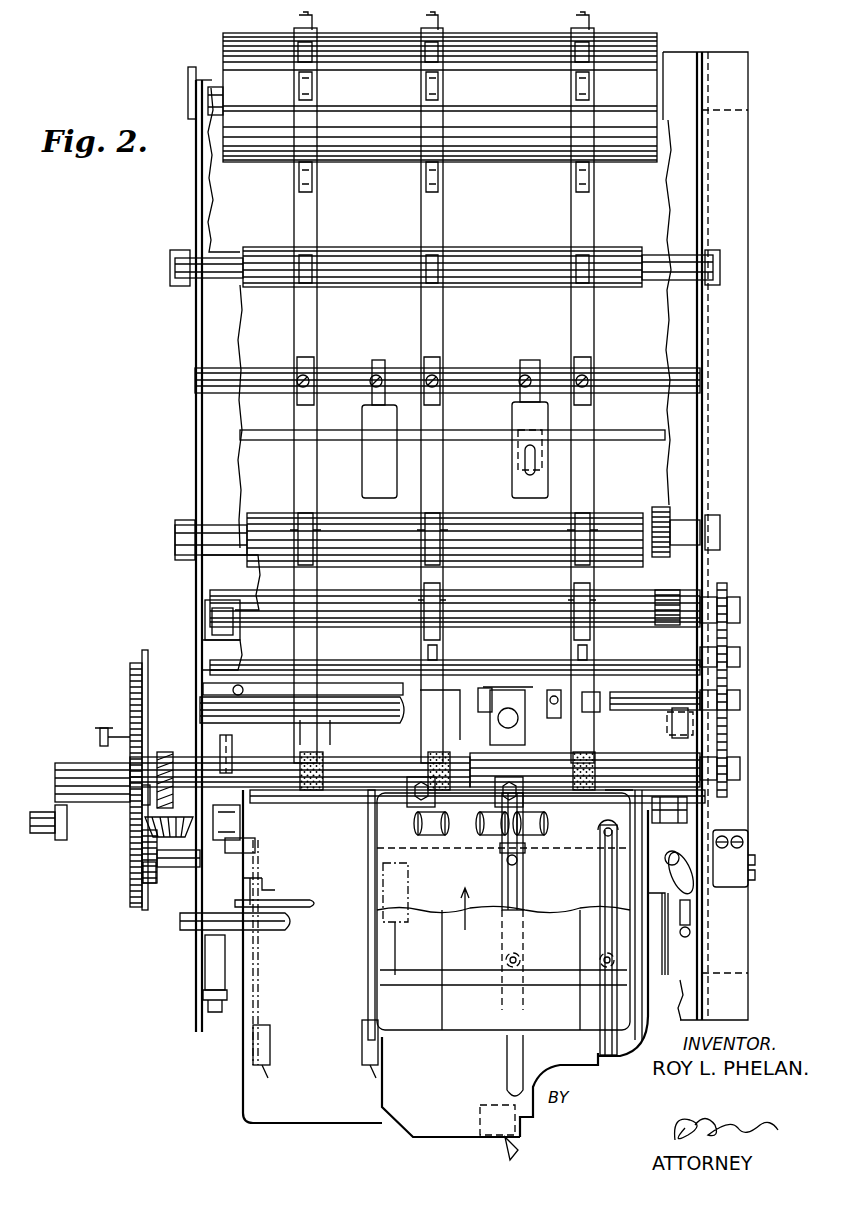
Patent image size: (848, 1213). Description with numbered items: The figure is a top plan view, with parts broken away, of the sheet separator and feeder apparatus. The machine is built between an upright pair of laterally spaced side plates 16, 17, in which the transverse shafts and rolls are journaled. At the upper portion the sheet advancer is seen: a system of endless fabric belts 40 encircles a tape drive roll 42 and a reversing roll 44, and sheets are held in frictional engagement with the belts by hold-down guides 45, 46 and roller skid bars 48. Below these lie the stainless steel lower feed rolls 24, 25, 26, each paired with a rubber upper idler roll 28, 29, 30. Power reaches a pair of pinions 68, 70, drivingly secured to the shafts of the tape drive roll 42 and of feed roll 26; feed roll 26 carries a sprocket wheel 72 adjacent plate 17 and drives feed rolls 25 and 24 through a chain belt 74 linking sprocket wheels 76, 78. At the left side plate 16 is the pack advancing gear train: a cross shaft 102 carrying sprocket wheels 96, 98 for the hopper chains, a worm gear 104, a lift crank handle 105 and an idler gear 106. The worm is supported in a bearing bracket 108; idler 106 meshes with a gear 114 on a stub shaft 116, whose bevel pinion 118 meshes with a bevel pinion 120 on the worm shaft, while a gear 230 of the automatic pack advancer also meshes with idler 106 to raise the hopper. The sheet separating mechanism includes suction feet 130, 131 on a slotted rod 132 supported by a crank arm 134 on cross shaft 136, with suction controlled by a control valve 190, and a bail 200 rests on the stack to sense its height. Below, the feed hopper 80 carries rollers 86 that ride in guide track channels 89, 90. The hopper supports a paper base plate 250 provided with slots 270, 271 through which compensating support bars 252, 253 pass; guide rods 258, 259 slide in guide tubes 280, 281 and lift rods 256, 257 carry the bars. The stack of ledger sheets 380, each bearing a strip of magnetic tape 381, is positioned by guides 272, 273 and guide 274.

The side plate 16 is at (196, 948).
The side plate 17 is at (685, 905).
The lower feed roll 24 is at (578, 790).
The lower feed roll 25 is at (552, 718).
The lower feed roll 26 is at (545, 627).
The upper feed idler roll 28 is at (323, 770).
The upper feed idler roll 29 is at (483, 712).
The upper feed idler roll 30 is at (440, 600).
The endless fabric belts 40 is at (294, 482).
The tape drive roll 42 is at (385, 570).
The reversing roll 44 is at (370, 162).
The hold-down guide 45 is at (362, 480).
The hold-down guide 46 is at (512, 460).
The roller skid bars 48 is at (310, 232).
The pinion 68 is at (675, 510).
The pinion 70 is at (680, 595).
The sprocket wheel 72 is at (727, 598).
The chain belt 74 is at (727, 655).
The sprocket wheel 76 is at (727, 698).
The sprocket wheel 78 is at (727, 765).
The feed hopper 80 is at (290, 1123).
The roller 86 is at (240, 838).
The guide track channel 89 is at (255, 850).
The guide track channel 90 is at (713, 838).
The sprocket wheel 96 is at (232, 750).
The sprocket wheel 98 is at (667, 732).
The cross shaft 102 is at (110, 802).
The worm gear 104 is at (140, 805).
The lift crank handle 105 is at (40, 812).
The idler gear 106 is at (130, 752).
The bearing bracket 108 is at (170, 752).
The gear 114 is at (142, 868).
The stub shaft 116 is at (190, 868).
The bevel pinion 118 is at (150, 885).
The bevel pinion 120 is at (170, 838).
The suction foot 130 is at (418, 830).
The suction foot 131 is at (490, 808).
The slotted rod 132 is at (340, 803).
The crank arm 134 is at (265, 895).
The cross shaft 136 is at (292, 926).
The control valve 190 is at (690, 936).
The bail 200 is at (312, 906).
The gear 230 is at (136, 663).
The paper base plate 250 is at (382, 1090).
The compensating support bar 252 is at (502, 880).
The compensating support bar 253 is at (600, 896).
The lift rod 256 is at (505, 960).
The lift rod 257 is at (598, 960).
The guide rod 258 is at (506, 860).
The guide rod 259 is at (605, 838).
The slot 270 is at (507, 1088).
The slot 271 is at (598, 1050).
The guide 272 is at (368, 850).
The guide 273 is at (640, 843).
The guide 274 is at (505, 1142).
The guide tube 280 is at (500, 846).
The guide tube 281 is at (600, 832).
The ledger sheet 380 is at (432, 1030).
The strip of magnetic tape 381 is at (383, 878).